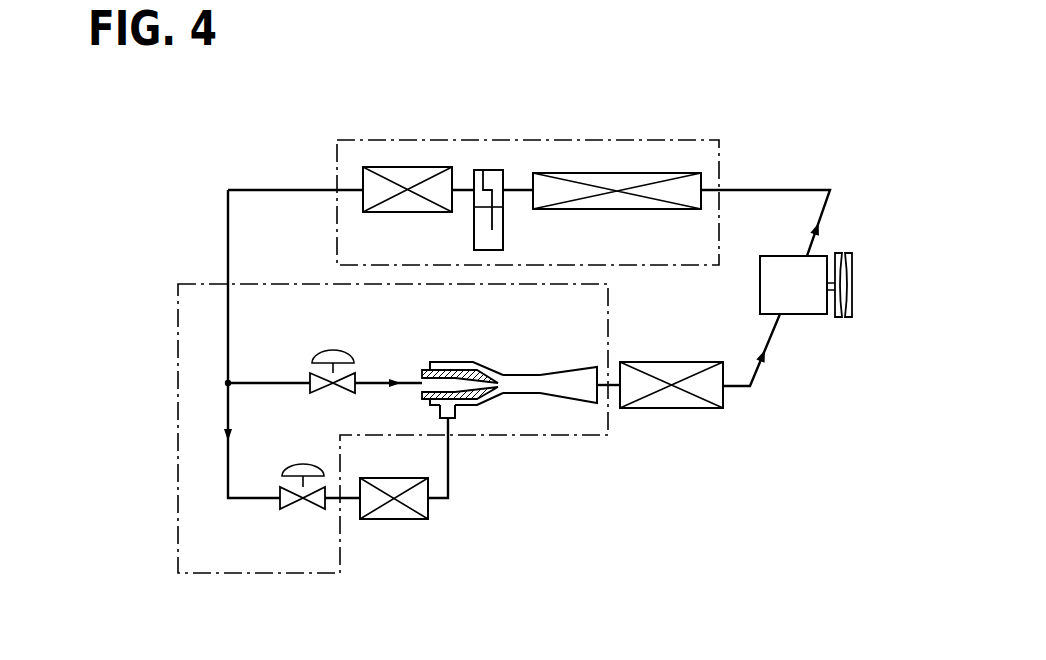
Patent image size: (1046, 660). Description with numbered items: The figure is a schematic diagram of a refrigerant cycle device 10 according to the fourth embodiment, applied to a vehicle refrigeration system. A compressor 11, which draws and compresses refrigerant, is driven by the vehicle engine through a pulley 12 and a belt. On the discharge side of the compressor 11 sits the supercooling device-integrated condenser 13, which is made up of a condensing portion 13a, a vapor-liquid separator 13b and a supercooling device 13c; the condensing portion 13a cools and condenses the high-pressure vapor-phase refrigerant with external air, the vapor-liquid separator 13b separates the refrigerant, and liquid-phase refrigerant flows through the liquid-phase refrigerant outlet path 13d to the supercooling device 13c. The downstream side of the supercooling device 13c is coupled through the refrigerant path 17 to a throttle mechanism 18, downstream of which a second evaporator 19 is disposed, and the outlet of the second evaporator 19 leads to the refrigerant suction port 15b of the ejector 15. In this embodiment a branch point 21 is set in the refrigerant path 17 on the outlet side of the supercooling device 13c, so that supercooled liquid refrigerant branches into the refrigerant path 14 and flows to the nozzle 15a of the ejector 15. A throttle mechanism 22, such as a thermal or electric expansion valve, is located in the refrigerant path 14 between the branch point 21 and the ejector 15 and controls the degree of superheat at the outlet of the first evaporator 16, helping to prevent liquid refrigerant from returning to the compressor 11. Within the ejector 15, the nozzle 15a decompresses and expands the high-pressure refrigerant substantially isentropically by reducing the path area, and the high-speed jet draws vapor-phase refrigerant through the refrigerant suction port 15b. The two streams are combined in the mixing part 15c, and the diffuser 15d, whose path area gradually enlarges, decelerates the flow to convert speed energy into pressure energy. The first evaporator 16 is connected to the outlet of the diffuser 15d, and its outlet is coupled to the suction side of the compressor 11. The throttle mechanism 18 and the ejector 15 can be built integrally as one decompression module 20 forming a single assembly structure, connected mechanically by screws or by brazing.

The refrigerant cycle device 10 is at (773, 188).
The compressor 11 is at (817, 254).
The pulley 12 is at (852, 287).
The supercooling device-integrated condenser 13 is at (681, 136).
The condensing portion 13a is at (630, 173).
The vapor-liquid separator 13b is at (497, 170).
The supercooling device 13c is at (408, 167).
The liquid-phase refrigerant outlet path 13d is at (483, 170).
The refrigerant path 14 is at (258, 383).
The ejector 15 is at (526, 409).
The nozzle 15a is at (478, 372).
The refrigerant suction port 15b is at (460, 413).
The mixing part 15c is at (518, 385).
The diffuser 15d is at (577, 390).
The first evaporator 16 is at (723, 398).
The refrigerant path 17 is at (228, 248).
The throttle mechanism 18 is at (303, 509).
The second evaporator 19 is at (402, 519).
The decompression module 20 is at (174, 504).
The branch point 21 is at (228, 383).
The throttle mechanism 22 is at (323, 395).